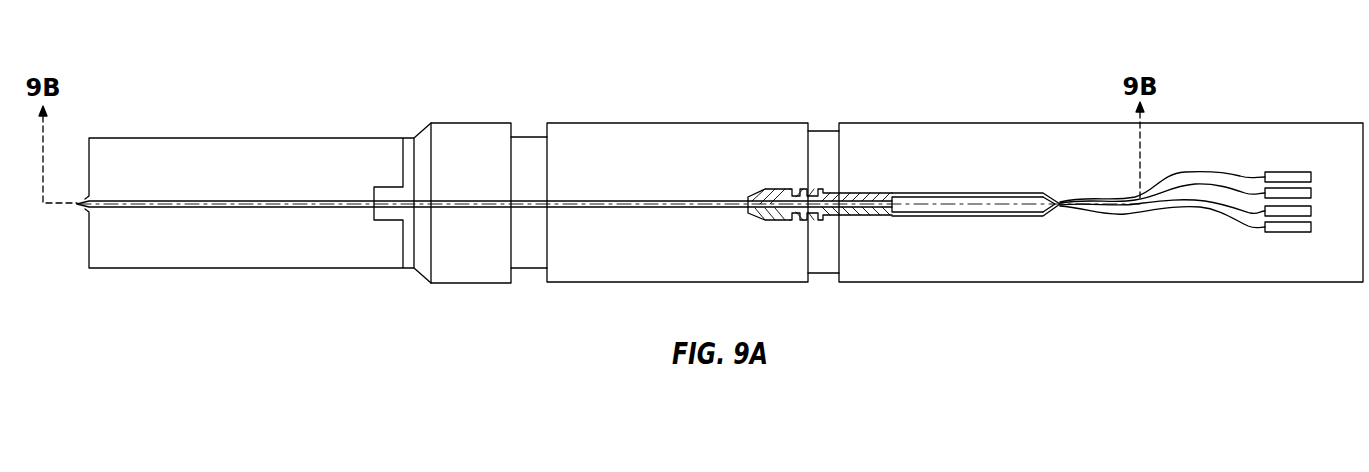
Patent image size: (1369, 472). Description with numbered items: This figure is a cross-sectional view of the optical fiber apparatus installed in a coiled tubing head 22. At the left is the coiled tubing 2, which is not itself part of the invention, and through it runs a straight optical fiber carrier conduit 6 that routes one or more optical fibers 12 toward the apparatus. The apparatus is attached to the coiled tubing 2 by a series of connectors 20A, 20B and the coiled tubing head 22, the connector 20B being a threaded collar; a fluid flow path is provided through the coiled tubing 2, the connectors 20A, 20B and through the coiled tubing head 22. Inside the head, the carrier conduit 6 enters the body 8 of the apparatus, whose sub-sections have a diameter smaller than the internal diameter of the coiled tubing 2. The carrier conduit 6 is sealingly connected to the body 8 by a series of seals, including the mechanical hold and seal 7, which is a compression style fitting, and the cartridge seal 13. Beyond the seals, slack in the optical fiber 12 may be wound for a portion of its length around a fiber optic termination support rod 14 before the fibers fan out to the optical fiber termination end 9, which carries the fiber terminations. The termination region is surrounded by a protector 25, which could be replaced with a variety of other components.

The coiled tubing 2 is at (193, 138).
The optical fiber carrier conduit 6 is at (296, 201).
The mechanical hold and seal 7 is at (757, 200).
The body 8 is at (931, 192).
The optical fiber termination end 9 is at (1287, 232).
The optical fiber 12 is at (1173, 175).
The cartridge seal 13 is at (815, 188).
The fiber optic termination support rod 14 is at (988, 196).
The connector 20A is at (472, 122).
The connector 20B is at (530, 137).
The coiled tubing head 22 is at (633, 122).
The protector 25 is at (1283, 122).